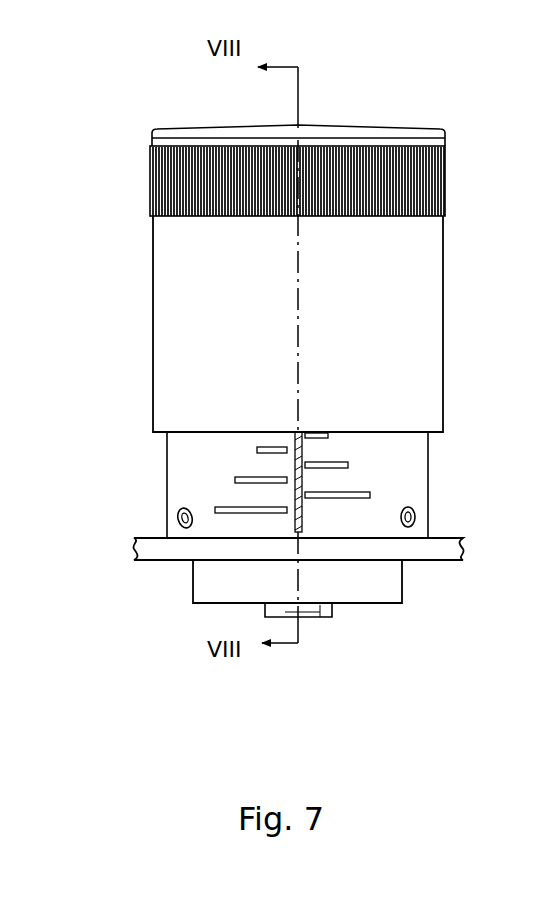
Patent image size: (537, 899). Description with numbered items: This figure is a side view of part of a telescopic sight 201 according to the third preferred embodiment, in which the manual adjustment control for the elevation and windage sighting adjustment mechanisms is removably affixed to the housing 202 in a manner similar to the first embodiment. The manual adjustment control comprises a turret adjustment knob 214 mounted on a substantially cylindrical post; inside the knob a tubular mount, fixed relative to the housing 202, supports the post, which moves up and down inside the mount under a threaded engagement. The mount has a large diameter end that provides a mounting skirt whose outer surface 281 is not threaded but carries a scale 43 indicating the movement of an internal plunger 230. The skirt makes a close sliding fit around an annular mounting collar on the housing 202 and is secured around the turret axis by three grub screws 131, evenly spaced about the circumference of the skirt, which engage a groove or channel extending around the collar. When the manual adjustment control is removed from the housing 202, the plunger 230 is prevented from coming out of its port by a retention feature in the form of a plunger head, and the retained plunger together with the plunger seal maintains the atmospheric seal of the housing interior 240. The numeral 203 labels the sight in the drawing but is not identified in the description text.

The telescopic sight 201 is at (164, 683).
The housing body 203 is at (418, 78).
The turret adjustment knob 214 is at (180, 128).
The outer surface 281 is at (405, 464).
The scale 43 is at (340, 470).
The grub screws 131 is at (183, 521).
The housing 202 is at (440, 538).
The housing interior 240 is at (385, 680).
The plunger 230 is at (324, 618).